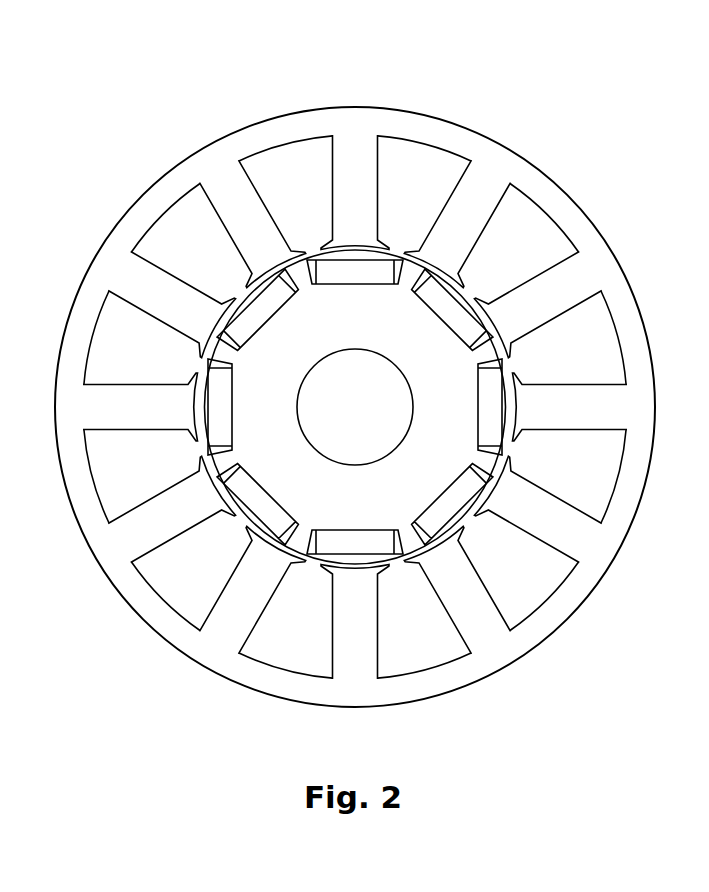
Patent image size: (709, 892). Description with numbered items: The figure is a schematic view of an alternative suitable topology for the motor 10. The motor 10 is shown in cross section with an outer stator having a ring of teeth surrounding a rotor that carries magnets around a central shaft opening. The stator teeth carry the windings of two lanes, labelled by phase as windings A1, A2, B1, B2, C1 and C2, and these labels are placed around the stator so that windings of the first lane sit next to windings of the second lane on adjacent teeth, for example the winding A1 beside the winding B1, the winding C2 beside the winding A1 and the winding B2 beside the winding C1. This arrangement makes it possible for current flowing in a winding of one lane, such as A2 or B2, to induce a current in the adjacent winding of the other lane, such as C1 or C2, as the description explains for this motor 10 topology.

The motor 10 is at (182, 160).
The winding A1 is at (435, 248).
The winding A2 is at (162, 318).
The winding B1 is at (240, 248).
The winding B2 is at (505, 318).
The winding C1 is at (530, 422).
The winding C2 is at (338, 226).